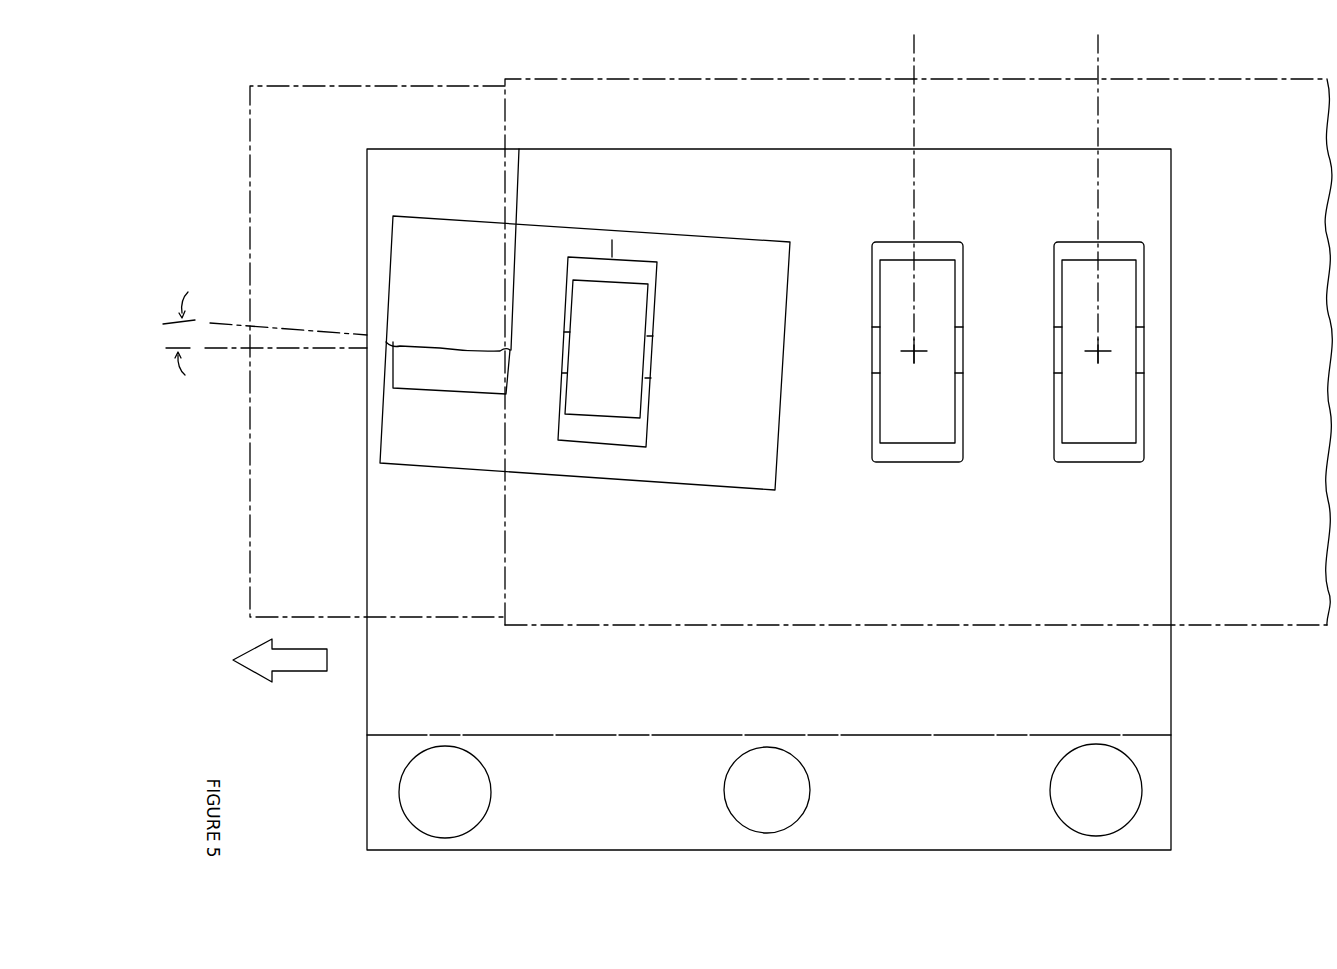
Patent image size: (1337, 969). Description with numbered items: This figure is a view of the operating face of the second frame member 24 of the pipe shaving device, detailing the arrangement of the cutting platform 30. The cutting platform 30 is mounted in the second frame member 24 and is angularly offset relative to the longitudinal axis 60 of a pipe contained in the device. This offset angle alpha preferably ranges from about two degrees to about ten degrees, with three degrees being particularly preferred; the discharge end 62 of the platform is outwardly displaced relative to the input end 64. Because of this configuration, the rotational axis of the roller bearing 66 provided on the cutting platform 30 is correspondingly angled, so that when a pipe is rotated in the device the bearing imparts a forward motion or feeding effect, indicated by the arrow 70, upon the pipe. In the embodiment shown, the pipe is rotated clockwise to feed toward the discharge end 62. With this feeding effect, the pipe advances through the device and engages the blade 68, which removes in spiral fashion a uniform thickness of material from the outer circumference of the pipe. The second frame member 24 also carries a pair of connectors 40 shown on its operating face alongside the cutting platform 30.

The second frame member 24 is at (796, 692).
The cutting platform 30 is at (611, 343).
The connectors 40 is at (1083, 415).
The longitudinal axis 60 is at (273, 352).
The discharge end 62 is at (413, 425).
The input end 64 is at (753, 327).
The roller bearing 66 is at (628, 378).
The blade 68 is at (473, 372).
The arrow 70 is at (287, 660).